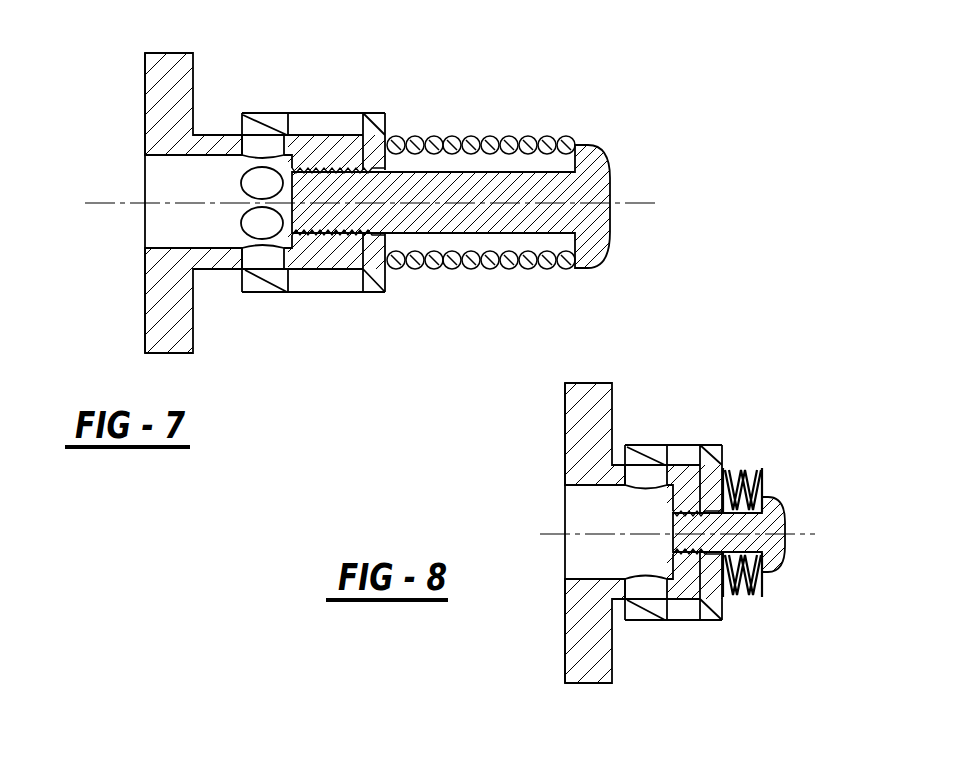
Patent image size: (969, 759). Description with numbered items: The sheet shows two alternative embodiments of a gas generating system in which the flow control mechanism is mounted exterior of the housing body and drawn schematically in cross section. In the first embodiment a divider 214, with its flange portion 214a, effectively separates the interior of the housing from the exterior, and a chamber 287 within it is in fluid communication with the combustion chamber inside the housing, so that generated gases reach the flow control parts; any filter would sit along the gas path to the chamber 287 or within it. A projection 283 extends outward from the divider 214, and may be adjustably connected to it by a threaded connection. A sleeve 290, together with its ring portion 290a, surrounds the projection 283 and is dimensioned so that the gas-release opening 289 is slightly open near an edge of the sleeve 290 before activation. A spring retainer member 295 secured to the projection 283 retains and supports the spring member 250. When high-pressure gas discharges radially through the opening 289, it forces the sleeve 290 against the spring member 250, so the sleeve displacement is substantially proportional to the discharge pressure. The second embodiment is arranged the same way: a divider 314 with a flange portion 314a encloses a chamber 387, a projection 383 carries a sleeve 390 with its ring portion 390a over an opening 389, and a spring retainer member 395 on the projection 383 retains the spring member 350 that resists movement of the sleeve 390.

In FIG. 7, the divider 214 is at (146, 82).
In FIG. 7, the housing flange 214a is at (162, 306).
In FIG. 7, the chamber 287 is at (175, 220).
In FIG. 7, the opening 289 is at (262, 148).
In FIG. 7, the sleeve 290 is at (262, 285).
In FIG. 7, the retaining ring 290a is at (318, 122).
In FIG. 7, the projection 283 is at (328, 150).
In FIG. 7, the spring member 250 is at (462, 143).
In FIG. 7, the spring retainer member 295 is at (595, 248).
In FIG. 8, the divider 314 is at (569, 398).
In FIG. 8, the housing flange 314a is at (580, 652).
In FIG. 8, the chamber 387 is at (585, 561).
In FIG. 8, the opening 389 is at (640, 478).
In FIG. 8, the sleeve 390 is at (640, 613).
In FIG. 8, the retaining ring 390a is at (686, 612).
In FIG. 8, the projection 383 is at (688, 485).
In FIG. 8, the spring member 350 is at (757, 466).
In FIG. 8, the spring retainer member 395 is at (778, 556).